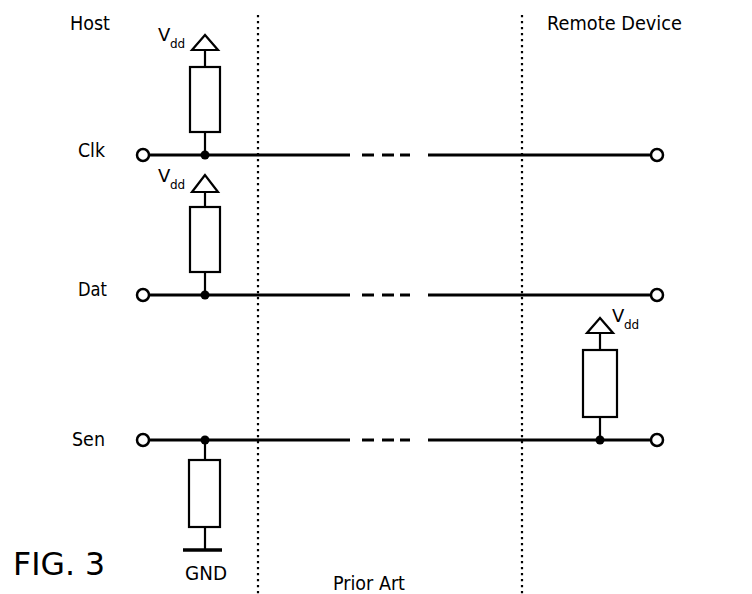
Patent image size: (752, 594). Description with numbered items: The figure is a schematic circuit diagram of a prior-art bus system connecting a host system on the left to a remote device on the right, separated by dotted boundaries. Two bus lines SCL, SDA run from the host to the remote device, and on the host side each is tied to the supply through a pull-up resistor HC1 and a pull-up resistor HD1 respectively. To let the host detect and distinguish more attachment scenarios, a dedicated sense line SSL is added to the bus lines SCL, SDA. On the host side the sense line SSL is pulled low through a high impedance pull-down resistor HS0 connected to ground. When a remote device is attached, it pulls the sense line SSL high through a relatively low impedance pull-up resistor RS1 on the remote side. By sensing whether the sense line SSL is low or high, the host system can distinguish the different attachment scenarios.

The bus line SCL is at (400, 142).
The bus line SDA is at (400, 282).
The sense line SSL is at (400, 425).
The pull-up resistor RHC1 HC1 is at (181, 95).
The pull-up resistor RHD1 HD1 is at (181, 235).
The high impedance pull-down resistor RHS0 HS0 is at (181, 495).
The low impedance pull-up resistor RRS1 RS1 is at (621, 379).